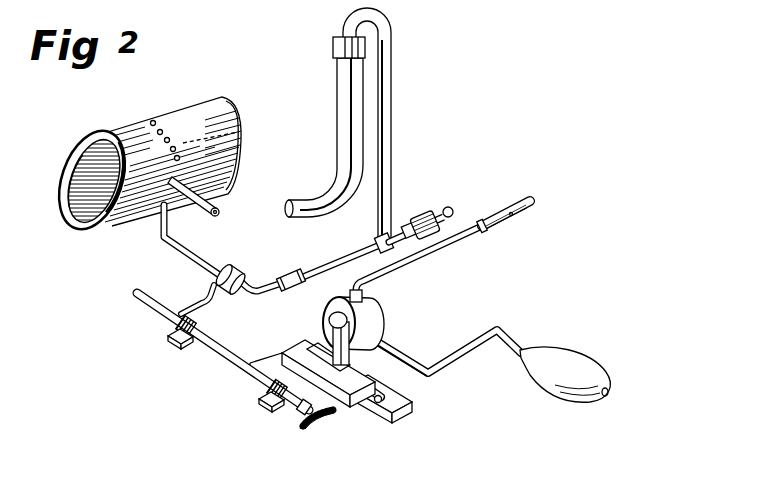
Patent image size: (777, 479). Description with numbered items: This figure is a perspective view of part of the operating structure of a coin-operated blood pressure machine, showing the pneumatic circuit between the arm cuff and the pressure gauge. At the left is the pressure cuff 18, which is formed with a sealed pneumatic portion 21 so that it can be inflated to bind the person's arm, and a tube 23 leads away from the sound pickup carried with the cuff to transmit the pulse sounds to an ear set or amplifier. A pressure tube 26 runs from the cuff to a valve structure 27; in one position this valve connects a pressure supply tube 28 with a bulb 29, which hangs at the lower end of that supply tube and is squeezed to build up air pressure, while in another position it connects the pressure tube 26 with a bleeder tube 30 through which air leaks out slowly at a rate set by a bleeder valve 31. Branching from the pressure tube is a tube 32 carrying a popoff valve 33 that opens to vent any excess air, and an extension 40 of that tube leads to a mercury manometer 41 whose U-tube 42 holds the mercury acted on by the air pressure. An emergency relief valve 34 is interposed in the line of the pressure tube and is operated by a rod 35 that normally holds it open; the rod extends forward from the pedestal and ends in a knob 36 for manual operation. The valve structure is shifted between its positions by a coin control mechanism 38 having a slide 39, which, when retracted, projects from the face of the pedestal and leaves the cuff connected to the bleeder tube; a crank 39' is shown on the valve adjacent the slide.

The pressure cuff 18 is at (96, 211).
The sealed pneumatic portion 21 is at (213, 117).
The tube 23 is at (209, 203).
The pressure tube 26 is at (162, 243).
The valve structure 27 is at (368, 315).
The pressure supply tube 28 is at (452, 366).
The bulb 29 is at (583, 376).
The bleeder tube 30 is at (393, 268).
The bleeder valve 31 is at (513, 222).
The tube 32 is at (347, 254).
The popoff valve 33 is at (432, 210).
The emergency relief valve 34 is at (242, 268).
The rod 35 is at (237, 361).
The knob 36 is at (330, 428).
The coin control mechanism 38 is at (413, 429).
The slide 39 is at (406, 405).
The crank 39' is at (369, 347).
The extension 40 is at (390, 154).
The manometer 41 is at (320, 74).
The U-tube 42 is at (307, 196).